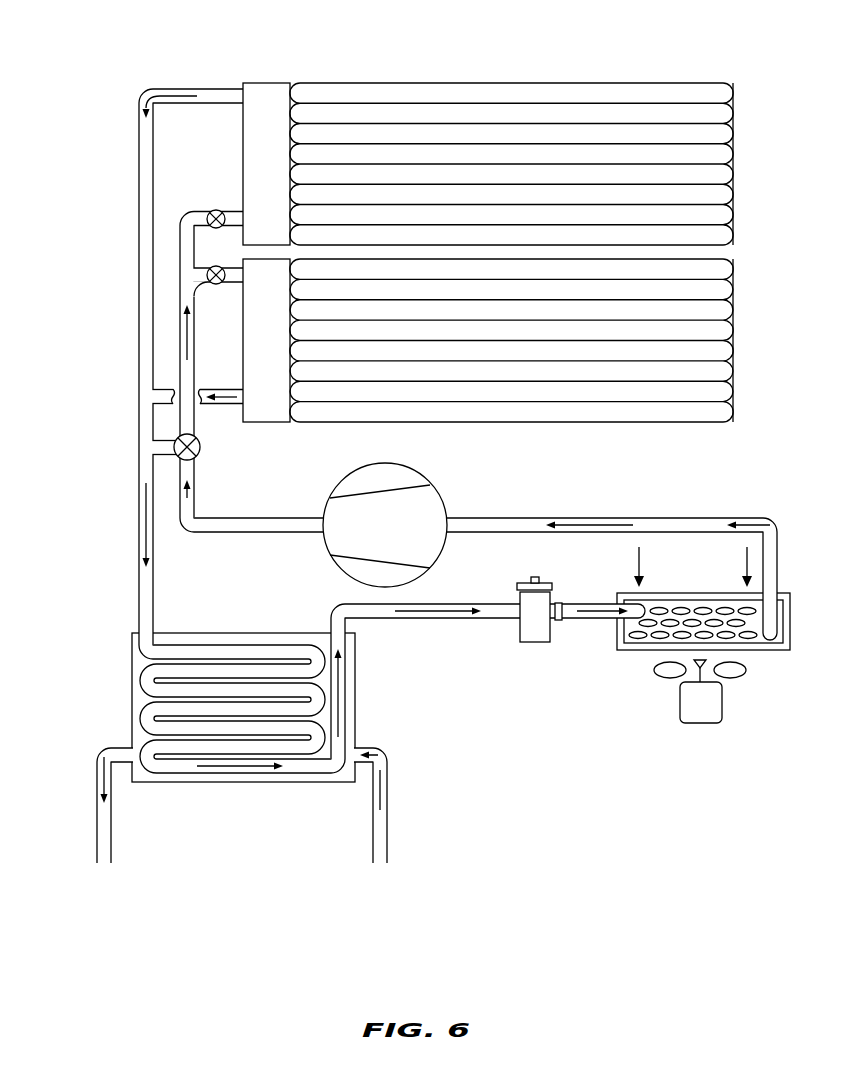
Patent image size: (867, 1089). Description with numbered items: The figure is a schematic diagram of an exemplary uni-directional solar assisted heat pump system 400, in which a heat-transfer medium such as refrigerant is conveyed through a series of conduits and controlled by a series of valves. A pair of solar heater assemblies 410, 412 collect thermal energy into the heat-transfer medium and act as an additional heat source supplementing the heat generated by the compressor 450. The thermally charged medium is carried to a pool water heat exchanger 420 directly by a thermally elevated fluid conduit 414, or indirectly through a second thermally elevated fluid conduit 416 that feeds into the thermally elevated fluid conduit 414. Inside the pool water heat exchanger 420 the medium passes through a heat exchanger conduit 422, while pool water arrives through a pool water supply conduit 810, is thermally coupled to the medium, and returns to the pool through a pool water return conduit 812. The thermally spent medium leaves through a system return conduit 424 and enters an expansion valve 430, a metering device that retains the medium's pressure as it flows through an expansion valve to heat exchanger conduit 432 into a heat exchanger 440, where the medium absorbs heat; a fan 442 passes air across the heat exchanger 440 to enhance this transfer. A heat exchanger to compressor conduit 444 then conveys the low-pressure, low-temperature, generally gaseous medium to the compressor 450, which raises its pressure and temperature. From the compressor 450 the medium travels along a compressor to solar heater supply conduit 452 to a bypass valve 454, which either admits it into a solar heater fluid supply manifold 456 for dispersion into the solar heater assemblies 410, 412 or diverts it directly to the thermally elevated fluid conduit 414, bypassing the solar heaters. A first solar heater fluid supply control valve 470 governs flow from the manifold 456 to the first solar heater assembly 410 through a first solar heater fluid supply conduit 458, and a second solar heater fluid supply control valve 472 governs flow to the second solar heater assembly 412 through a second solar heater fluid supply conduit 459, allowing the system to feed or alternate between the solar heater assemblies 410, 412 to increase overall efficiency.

The solar assisted heat pump system 400 is at (125, 100).
The first solar heater assembly 410 is at (733, 350).
The second solar heater assembly 412 is at (733, 165).
The thermally elevated fluid conduit 414 is at (139, 152).
The thermally elevated fluid conduit 416 is at (228, 389).
The pool water heat exchanger 420 is at (132, 705).
The heat exchanger conduit 422 is at (140, 680).
The system return conduit 424 is at (417, 619).
The expansion valve 430 is at (520, 628).
The expansion valve to heat exchanger conduit 432 is at (603, 604).
The heat exchanger 440 is at (677, 593).
The fan 442 is at (722, 703).
The heat exchanger to compressor conduit 444 is at (628, 518).
The compressor 450 is at (437, 496).
The compressor to solar heater supply conduit 452 is at (245, 518).
The bypass valve 454 is at (180, 460).
The solar heater fluid supply manifold 456 is at (180, 325).
The first solar heater fluid supply conduit 458 is at (230, 267).
The second solar heater fluid supply conduit 459 is at (232, 210).
The first solar heater fluid supply control valve 470 is at (194, 297).
The second solar heater fluid supply control valve 472 is at (190, 243).
The pool water supply conduit 810 is at (387, 818).
The pool water return conduit 812 is at (97, 822).